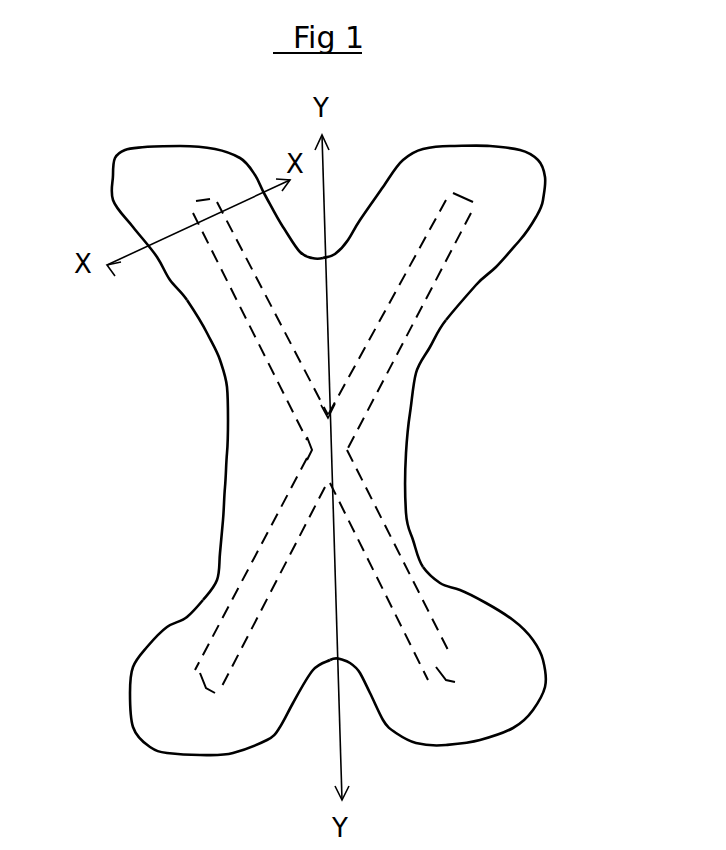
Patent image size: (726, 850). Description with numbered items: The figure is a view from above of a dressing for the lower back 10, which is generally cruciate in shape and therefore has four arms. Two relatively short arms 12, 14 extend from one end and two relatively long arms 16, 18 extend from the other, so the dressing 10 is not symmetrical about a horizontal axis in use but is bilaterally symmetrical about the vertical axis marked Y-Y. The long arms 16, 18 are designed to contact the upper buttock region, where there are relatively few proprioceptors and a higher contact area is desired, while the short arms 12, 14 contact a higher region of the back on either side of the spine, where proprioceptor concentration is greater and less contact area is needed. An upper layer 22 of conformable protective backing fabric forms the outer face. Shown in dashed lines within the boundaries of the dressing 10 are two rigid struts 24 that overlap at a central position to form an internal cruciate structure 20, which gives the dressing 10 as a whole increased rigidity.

The dressing for the lower back 10 is at (163, 480).
The relatively short arm 12 is at (143, 680).
The relatively short arm 14 is at (516, 687).
The relatively long arm 16 is at (124, 189).
The relatively long arm 18 is at (520, 200).
The internal cruciate structure 20 is at (383, 377).
The upper layer 22 is at (386, 457).
The rigid strut 24 is at (204, 680).